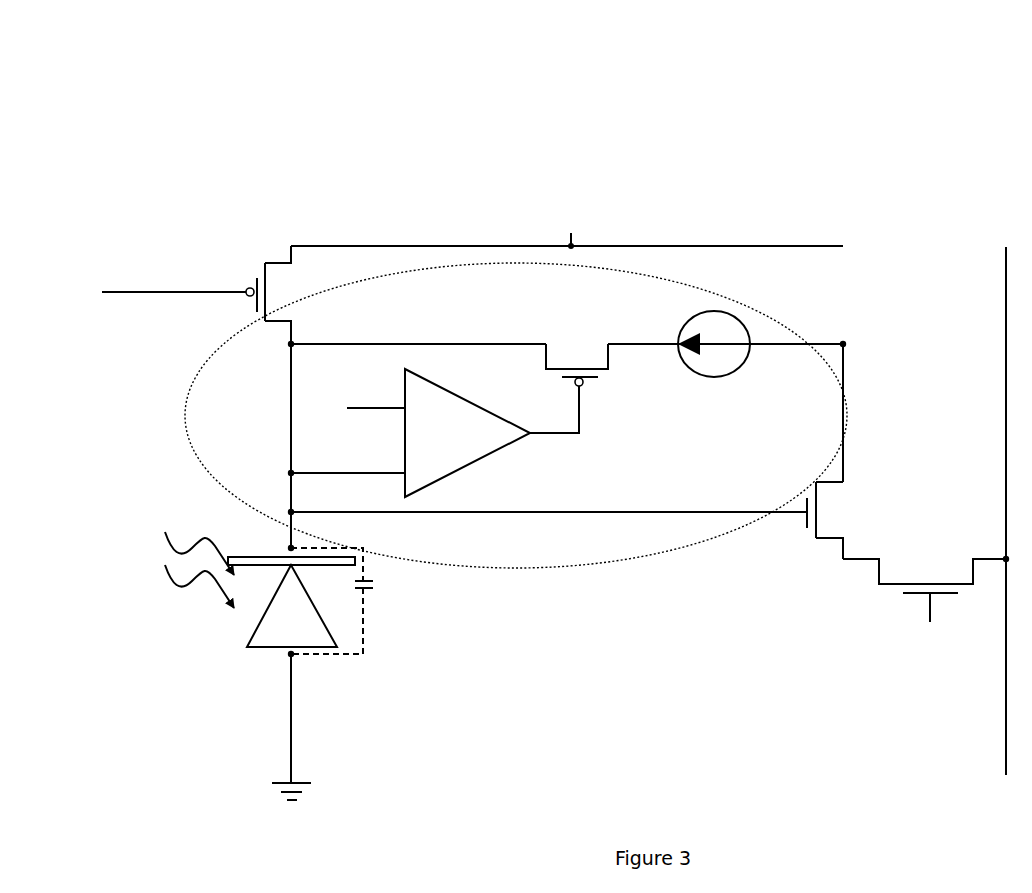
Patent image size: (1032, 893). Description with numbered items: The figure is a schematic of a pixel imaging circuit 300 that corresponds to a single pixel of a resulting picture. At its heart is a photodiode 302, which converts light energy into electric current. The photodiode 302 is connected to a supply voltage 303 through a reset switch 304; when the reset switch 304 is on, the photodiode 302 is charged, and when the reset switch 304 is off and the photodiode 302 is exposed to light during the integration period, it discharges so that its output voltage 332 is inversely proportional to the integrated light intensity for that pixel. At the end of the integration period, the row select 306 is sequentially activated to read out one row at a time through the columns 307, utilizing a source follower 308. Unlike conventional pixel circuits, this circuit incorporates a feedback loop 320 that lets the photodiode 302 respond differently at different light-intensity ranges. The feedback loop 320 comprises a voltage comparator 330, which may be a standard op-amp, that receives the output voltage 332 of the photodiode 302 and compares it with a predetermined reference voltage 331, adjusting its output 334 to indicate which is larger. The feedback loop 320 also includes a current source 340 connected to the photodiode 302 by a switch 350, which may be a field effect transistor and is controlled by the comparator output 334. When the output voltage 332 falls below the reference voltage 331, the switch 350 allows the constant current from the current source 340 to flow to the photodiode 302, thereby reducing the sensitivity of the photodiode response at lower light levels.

The pixel imaging circuit 300 is at (121, 85).
The photodiode 302 is at (258, 648).
The supply voltage 303 is at (578, 198).
The reset switch 304 is at (198, 253).
The row select 306 is at (925, 655).
The columns 307 is at (1010, 212).
The source follower 308 is at (800, 559).
The feedback loop 320 is at (183, 415).
The voltage comparator 330 is at (490, 457).
The predetermined reference voltage 331 is at (338, 390).
The output voltage 332 is at (342, 448).
The output of the comparator 334 is at (546, 432).
The current source 340 is at (688, 323).
The switch 350 is at (590, 387).